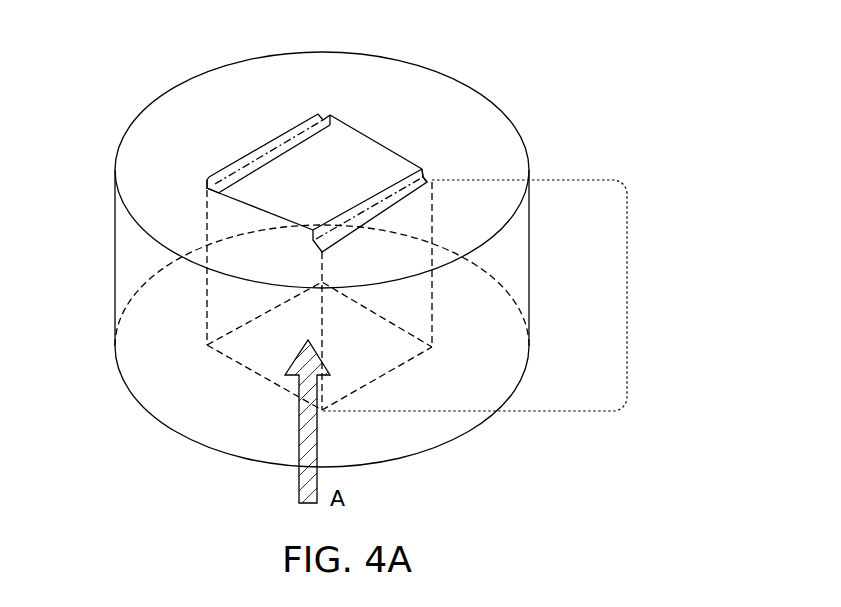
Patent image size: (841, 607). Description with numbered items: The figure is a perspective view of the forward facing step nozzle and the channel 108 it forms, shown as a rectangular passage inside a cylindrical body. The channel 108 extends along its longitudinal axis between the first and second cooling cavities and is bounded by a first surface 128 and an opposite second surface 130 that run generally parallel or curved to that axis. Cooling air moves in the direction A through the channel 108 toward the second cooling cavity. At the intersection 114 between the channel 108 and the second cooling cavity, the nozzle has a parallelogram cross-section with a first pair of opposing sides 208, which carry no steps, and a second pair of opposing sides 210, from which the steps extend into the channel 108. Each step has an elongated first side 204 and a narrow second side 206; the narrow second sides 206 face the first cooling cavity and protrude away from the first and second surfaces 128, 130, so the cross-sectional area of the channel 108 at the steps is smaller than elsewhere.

The channel 108 is at (627, 297).
The intersection 114 is at (354, 78).
The first surface 128 is at (331, 203).
The second surface 130 is at (287, 135).
The elongated first sides 204 is at (273, 181).
The narrow second sides 206 is at (207, 185).
The first pair of opposing sides 208 is at (268, 205).
The second pair of opposing sides 210 is at (247, 160).